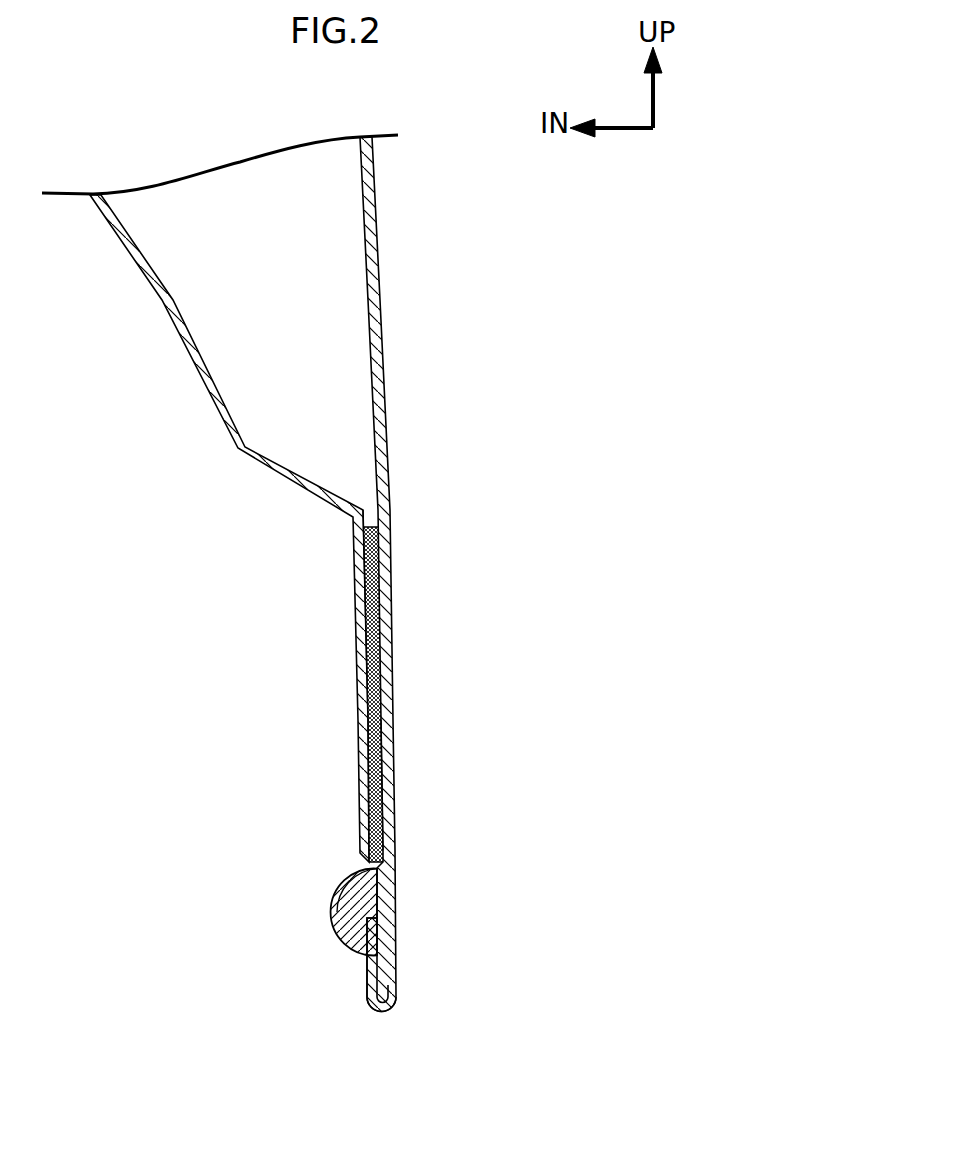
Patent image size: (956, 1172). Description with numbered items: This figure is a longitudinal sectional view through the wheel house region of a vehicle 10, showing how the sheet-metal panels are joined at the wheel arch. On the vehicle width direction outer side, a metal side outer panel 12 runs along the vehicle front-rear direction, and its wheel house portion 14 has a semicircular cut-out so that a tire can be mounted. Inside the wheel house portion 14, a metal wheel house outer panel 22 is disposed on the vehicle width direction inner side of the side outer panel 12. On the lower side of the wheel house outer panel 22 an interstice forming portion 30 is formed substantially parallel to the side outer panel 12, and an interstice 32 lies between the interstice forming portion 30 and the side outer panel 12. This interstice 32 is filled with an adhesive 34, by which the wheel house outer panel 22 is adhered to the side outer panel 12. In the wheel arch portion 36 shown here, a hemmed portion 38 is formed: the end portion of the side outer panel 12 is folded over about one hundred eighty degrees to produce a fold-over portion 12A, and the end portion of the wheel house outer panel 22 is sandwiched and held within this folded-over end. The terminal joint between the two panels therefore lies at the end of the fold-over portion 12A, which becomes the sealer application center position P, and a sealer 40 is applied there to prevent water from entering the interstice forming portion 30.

The vehicle 10 is at (582, 327).
The side outer panel 12 is at (363, 610).
The fold-over portion 12A is at (373, 978).
The wheel house portion 14 is at (448, 924).
The wheel house outer panel 22 is at (354, 590).
The interstice forming portion 30 is at (362, 645).
The interstice 32 is at (382, 570).
The adhesive 34 is at (382, 667).
The wheel arch portion 36 is at (400, 997).
The hemmed portion 38 is at (392, 1013).
The sealer 40 is at (360, 885).
The sealer application center position P is at (340, 905).